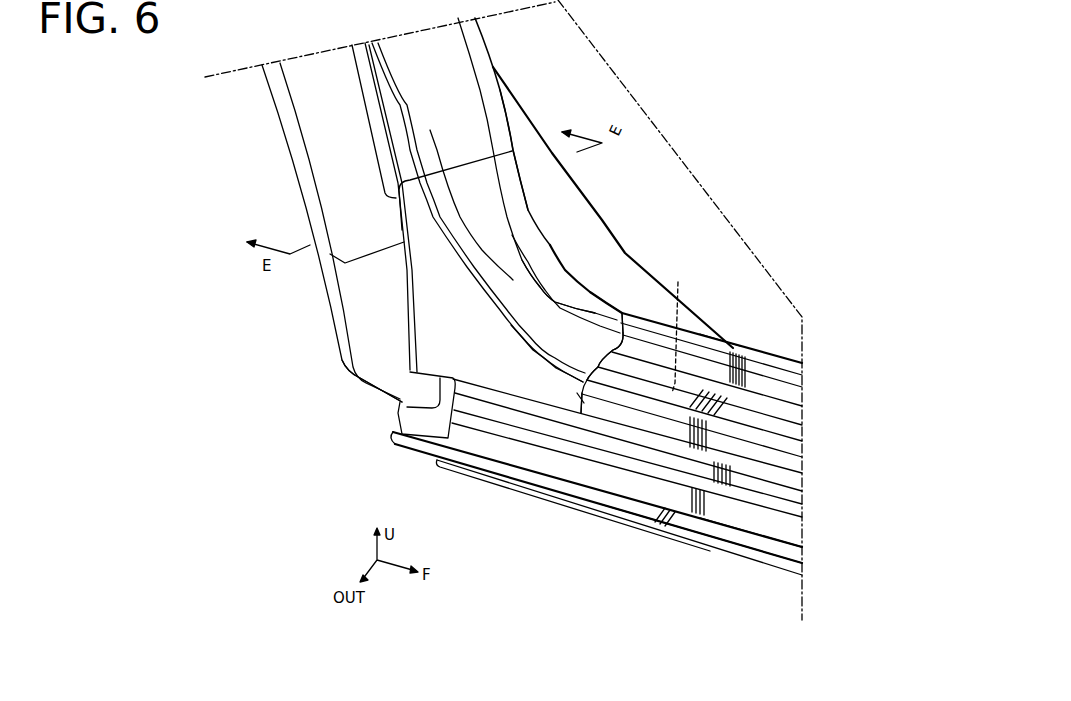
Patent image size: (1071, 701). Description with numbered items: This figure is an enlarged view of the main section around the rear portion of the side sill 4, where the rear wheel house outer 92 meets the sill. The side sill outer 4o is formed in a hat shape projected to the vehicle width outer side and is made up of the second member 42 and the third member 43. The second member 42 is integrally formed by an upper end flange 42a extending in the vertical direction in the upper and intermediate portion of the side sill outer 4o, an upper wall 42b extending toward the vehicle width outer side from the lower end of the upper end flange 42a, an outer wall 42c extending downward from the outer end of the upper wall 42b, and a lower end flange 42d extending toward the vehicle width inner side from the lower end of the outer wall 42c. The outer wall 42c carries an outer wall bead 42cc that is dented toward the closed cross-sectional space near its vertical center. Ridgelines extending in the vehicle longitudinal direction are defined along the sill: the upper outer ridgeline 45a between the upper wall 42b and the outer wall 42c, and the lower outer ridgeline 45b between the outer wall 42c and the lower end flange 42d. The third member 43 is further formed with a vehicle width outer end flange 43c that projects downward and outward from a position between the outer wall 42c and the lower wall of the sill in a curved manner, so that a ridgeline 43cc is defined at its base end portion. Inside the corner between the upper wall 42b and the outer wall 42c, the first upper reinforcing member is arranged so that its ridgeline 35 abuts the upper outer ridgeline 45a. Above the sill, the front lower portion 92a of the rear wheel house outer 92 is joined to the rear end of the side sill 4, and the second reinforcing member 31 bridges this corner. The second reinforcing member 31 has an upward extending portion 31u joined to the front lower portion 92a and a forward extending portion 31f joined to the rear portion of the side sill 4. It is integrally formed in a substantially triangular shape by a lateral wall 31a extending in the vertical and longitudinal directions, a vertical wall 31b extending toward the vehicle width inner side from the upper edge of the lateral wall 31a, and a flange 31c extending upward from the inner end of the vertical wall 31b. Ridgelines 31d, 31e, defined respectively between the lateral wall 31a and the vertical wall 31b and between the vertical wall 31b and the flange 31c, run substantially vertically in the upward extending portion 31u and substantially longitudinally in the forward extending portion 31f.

The rear wheel house outer 92 is at (330, 282).
The front lower portion of the rear wheel house outer 92a is at (332, 322).
The second reinforcing member 31 is at (547, 247).
The upward extending portion 31u is at (522, 185).
The lateral wall 31a is at (586, 413).
The vertical wall 31b is at (601, 364).
The flange 31c is at (624, 327).
The ridgeline 31d is at (547, 358).
The ridgeline 31e is at (571, 315).
The forward extending portion 31f is at (604, 300).
The ridgeline 35 is at (678, 327).
The side sill 4 is at (698, 333).
The side sill outer 4o is at (746, 349).
The second member 42 is at (772, 355).
The upper end flange 42a is at (790, 376).
The upper wall 42b is at (792, 417).
The outer wall 42c is at (790, 472).
The outer wall bead 42cc is at (790, 492).
The lower end flange 42d is at (683, 542).
The third member 43 is at (622, 520).
The vehicle width outer end flange 43c is at (563, 498).
The ridgeline 43cc is at (757, 524).
The upper outer ridgeline 45a is at (790, 442).
The lower outer ridgeline 45b is at (790, 549).